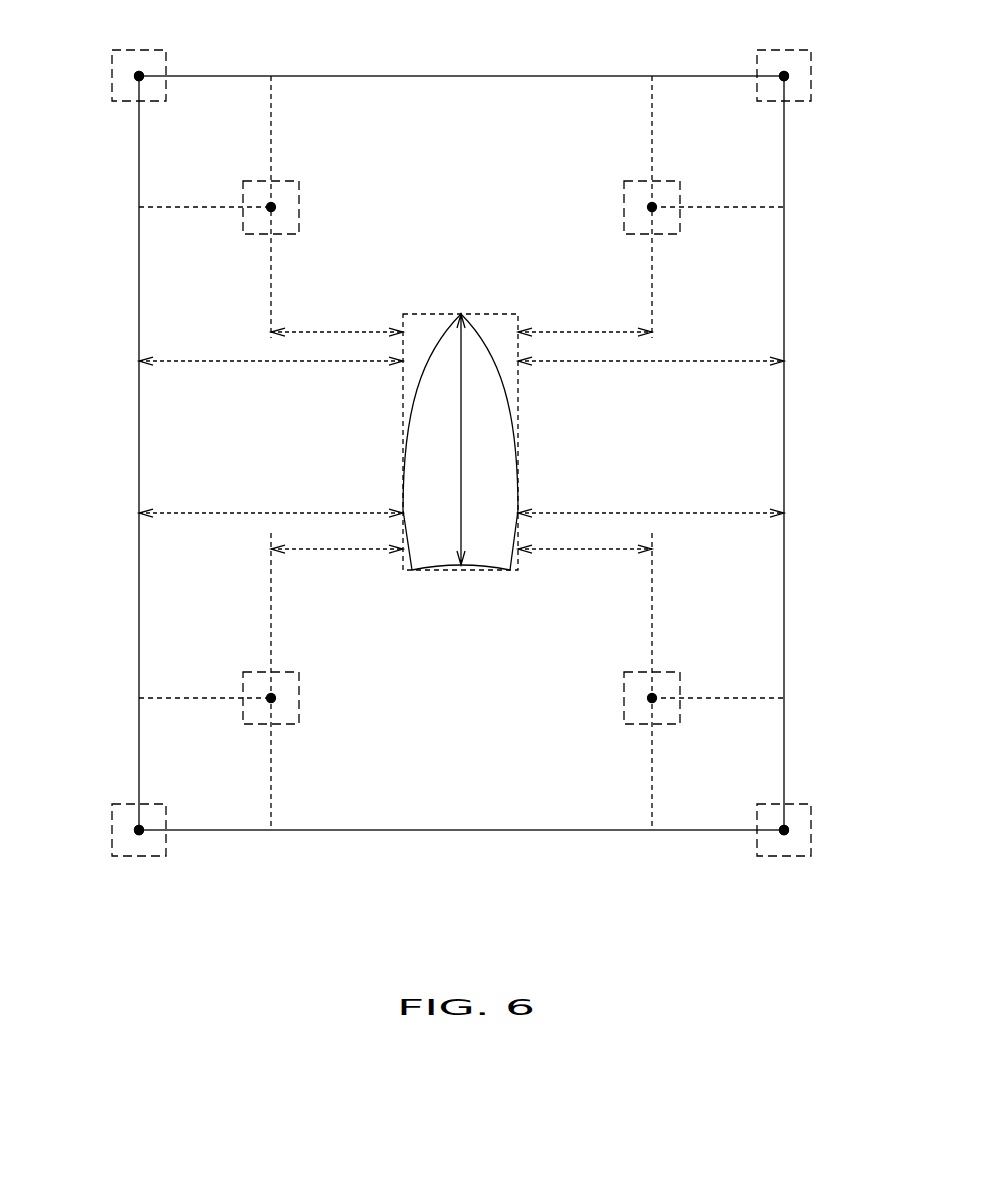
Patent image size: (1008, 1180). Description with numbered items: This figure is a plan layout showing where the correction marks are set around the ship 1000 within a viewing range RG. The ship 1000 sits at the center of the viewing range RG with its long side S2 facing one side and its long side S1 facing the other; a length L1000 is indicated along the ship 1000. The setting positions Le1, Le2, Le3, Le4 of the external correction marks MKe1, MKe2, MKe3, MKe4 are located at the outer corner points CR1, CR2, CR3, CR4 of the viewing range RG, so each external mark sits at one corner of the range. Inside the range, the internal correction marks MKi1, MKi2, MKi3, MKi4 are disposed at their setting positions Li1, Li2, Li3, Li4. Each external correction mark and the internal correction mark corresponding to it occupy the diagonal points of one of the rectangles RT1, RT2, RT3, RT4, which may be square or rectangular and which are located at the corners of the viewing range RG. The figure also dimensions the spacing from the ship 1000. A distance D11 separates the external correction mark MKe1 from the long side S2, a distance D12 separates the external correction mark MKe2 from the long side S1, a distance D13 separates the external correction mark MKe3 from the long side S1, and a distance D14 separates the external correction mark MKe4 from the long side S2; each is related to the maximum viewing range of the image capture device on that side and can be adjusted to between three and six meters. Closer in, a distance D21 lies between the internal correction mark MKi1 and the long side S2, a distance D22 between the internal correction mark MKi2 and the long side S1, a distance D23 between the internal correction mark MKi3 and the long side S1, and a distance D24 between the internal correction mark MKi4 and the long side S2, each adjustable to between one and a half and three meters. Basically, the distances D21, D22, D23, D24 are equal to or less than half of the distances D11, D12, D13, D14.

The viewing range RG is at (400, 76).
The rectangle RT1 is at (272, 100).
The rectangle RT2 is at (651, 100).
The rectangle RT3 is at (651, 805).
The rectangle RT4 is at (272, 805).
The external correction mark MKe1 is at (140, 50).
The external correction mark MKe2 is at (783, 50).
The external correction mark MKe3 is at (783, 856).
The external correction mark MKe4 is at (140, 856).
The outer corner point CR1 is at (139, 76).
The outer corner point CR2 is at (784, 76).
The outer corner point CR3 is at (784, 830).
The outer corner point CR4 is at (139, 830).
The setting position Le1 is at (139, 76).
The setting position Le2 is at (784, 76).
The setting position Le3 is at (784, 830).
The setting position Le4 is at (139, 830).
The internal correction mark MKi1 is at (258, 181).
The internal correction mark MKi2 is at (665, 181).
The internal correction mark MKi3 is at (665, 724).
The internal correction mark MKi4 is at (258, 724).
The setting position Li1 is at (271, 207).
The setting position Li2 is at (652, 207).
The setting position Li3 is at (652, 698).
The setting position Li4 is at (271, 698).
The ship 1000 is at (518, 478).
The pattern length L1000 is at (461, 452).
The long side S1 is at (513, 402).
The long side S2 is at (410, 402).
The distance D11 is at (271, 374).
The distance D12 is at (651, 374).
The distance D13 is at (651, 501).
The distance D14 is at (271, 500).
The distance D21 is at (337, 318).
The distance D22 is at (585, 318).
The distance D23 is at (585, 563).
The distance D24 is at (337, 563).